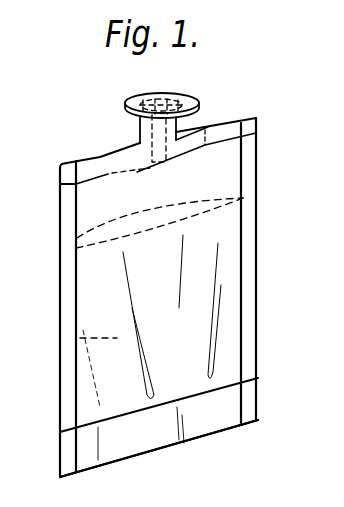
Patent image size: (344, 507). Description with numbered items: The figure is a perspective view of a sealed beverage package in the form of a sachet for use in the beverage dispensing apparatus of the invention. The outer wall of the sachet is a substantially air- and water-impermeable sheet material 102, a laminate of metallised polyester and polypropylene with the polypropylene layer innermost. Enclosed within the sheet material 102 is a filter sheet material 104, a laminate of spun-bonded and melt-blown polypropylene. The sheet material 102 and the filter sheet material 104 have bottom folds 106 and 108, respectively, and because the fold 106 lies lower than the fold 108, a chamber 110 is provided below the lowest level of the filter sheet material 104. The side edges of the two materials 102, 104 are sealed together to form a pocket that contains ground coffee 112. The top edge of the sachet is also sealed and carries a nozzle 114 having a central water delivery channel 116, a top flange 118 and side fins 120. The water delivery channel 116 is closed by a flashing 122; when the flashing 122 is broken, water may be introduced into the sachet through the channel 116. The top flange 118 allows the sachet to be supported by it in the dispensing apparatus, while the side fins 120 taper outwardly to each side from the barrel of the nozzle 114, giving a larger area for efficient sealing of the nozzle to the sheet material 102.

The sheet material 102 is at (93, 400).
The filter sheet material 104 is at (80, 250).
The bottom fold 106 is at (192, 440).
The bottom fold 108 is at (192, 398).
The chamber 110 is at (115, 440).
The ground coffee 112 is at (78, 338).
The nozzle 114 is at (134, 126).
The water delivery channel 116 is at (165, 100).
The top flange 118 is at (194, 117).
The side fins 120 is at (128, 163).
The flashing 122 is at (138, 100).